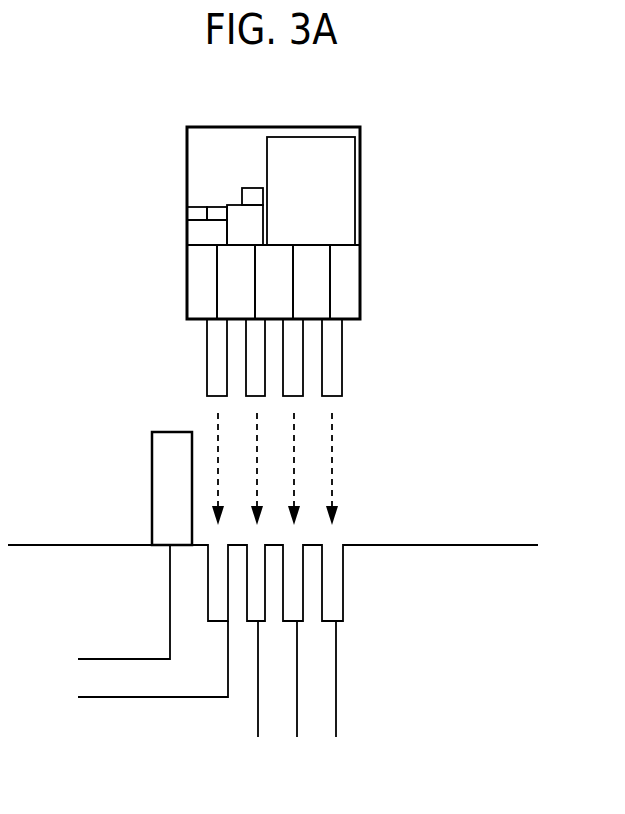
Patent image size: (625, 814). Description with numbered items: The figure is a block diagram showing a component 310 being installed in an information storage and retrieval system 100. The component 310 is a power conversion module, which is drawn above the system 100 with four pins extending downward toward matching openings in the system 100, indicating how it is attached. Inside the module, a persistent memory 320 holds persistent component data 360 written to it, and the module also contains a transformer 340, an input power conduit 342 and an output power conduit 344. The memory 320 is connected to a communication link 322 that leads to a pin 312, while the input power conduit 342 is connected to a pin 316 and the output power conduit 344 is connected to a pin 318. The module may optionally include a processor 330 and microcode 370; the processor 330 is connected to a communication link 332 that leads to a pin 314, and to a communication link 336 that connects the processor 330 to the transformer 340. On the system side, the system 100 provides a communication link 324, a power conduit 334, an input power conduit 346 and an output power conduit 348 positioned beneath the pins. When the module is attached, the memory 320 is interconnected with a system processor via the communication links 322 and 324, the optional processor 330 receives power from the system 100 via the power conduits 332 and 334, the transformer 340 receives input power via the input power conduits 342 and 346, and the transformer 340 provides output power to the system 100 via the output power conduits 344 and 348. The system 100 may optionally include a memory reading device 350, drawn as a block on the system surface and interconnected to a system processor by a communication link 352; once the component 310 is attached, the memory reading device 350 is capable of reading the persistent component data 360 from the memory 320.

The information storage and retrieval system 100 is at (471, 520).
The component 310 is at (380, 152).
The pin 312 is at (207, 374).
The pin 314 is at (246, 341).
The pin 316 is at (303, 339).
The pin 318 is at (342, 370).
The persistent memory 320 is at (188, 231).
The communication link 322 is at (253, 262).
The communication link 324 is at (157, 699).
The processor 330 is at (232, 205).
The communication link 332 is at (253, 291).
The power conduit 334 is at (258, 717).
The communication link 336 is at (260, 188).
The transformer 340 is at (327, 191).
The input power conduit 342 is at (293, 287).
The output power conduit 344 is at (330, 255).
The input power conduit 346 is at (297, 671).
The output power conduit 348 is at (336, 637).
The memory reading device 350 is at (155, 460).
The communication link 352 is at (170, 598).
The persistent component data 360 is at (196, 207).
The microcode 370 is at (211, 207).